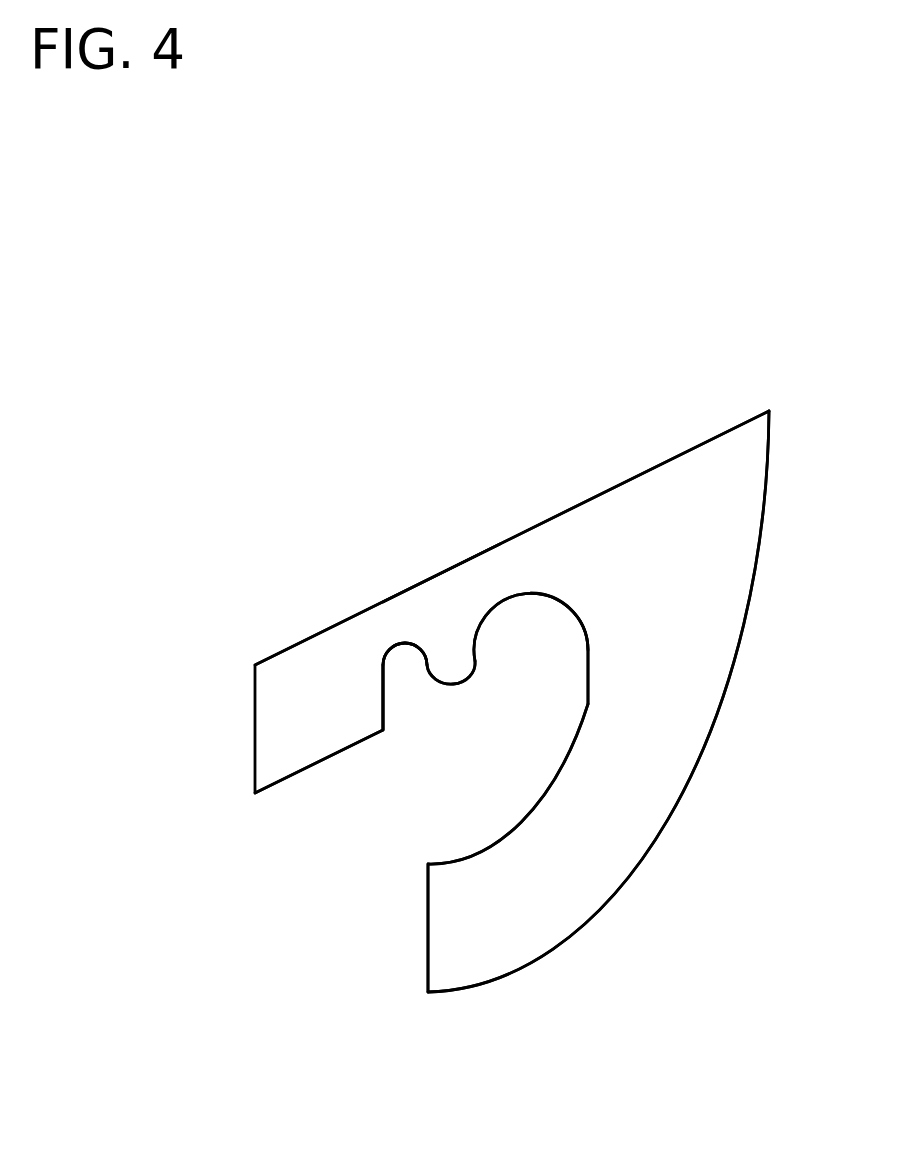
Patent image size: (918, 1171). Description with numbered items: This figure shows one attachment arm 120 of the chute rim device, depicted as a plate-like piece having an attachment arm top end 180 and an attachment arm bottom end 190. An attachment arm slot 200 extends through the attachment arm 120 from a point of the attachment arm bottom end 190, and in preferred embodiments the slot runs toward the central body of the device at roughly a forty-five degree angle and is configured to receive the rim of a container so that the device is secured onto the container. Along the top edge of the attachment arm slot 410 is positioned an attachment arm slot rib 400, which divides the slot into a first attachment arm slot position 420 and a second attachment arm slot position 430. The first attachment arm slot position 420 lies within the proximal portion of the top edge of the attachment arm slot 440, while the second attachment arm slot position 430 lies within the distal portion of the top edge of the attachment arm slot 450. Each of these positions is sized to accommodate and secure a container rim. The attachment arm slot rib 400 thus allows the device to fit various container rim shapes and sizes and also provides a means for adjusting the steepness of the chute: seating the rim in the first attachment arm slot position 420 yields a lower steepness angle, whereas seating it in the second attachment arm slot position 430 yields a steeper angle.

The attachment arm 120 is at (692, 666).
The attachment arm top end 180 is at (742, 486).
The attachment arm bottom end 190 is at (482, 922).
The attachment arm slot 200 is at (470, 745).
The attachment arm slot rib 400 is at (467, 653).
The top edge of the attachment arm slot 410 is at (433, 605).
The first attachment arm slot position 420 is at (406, 670).
The second attachment arm slot position 430 is at (531, 627).
The proximal portion of the top edge of the attachment arm slot 440 is at (403, 702).
The distal portion of the top edge of the attachment arm slot 450 is at (553, 640).